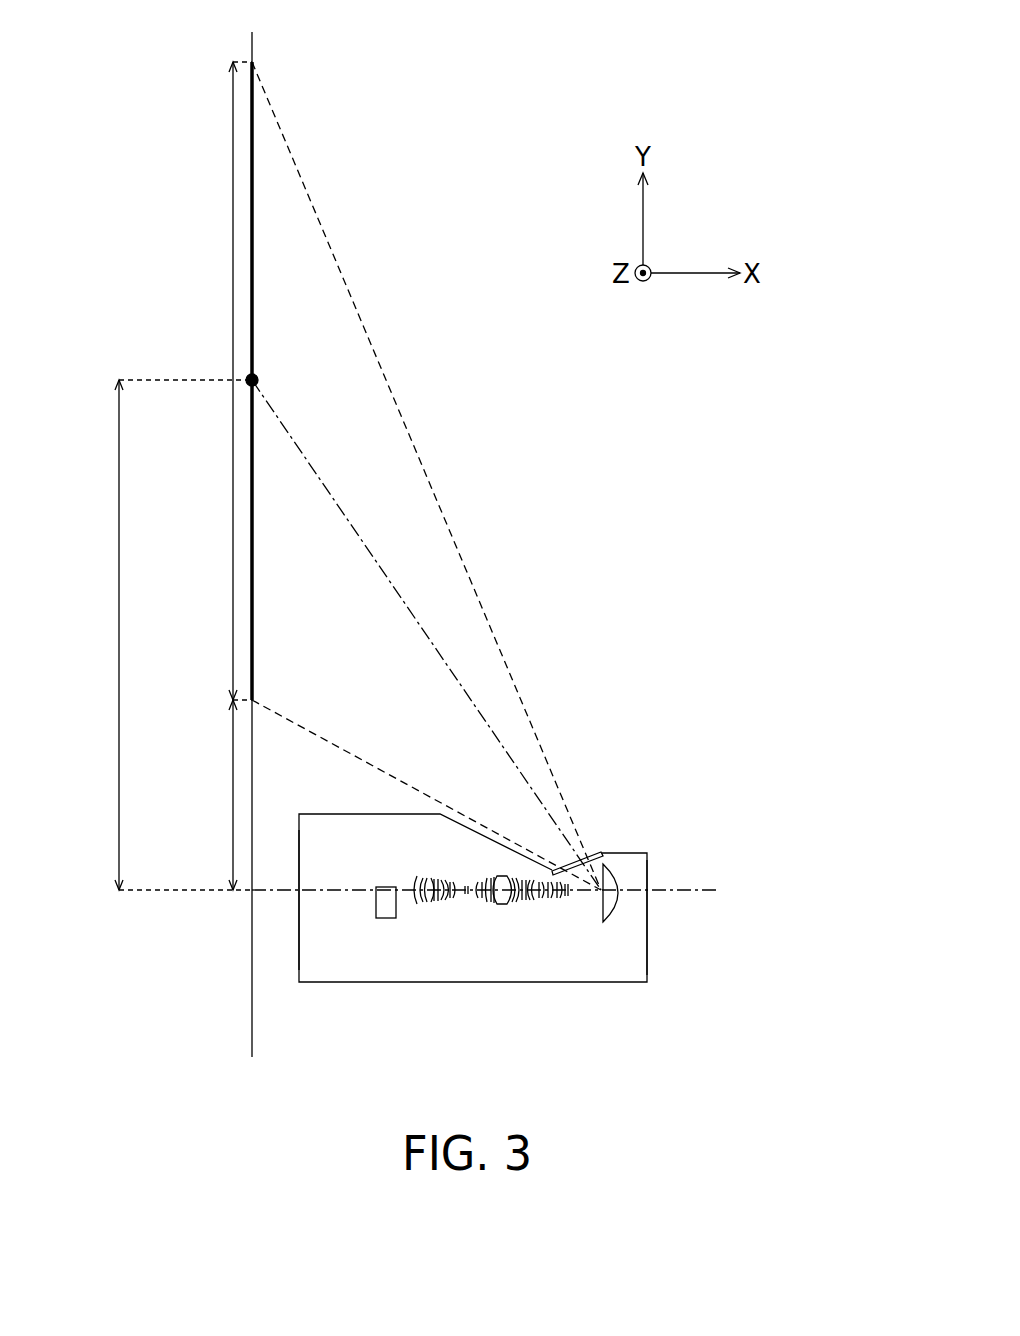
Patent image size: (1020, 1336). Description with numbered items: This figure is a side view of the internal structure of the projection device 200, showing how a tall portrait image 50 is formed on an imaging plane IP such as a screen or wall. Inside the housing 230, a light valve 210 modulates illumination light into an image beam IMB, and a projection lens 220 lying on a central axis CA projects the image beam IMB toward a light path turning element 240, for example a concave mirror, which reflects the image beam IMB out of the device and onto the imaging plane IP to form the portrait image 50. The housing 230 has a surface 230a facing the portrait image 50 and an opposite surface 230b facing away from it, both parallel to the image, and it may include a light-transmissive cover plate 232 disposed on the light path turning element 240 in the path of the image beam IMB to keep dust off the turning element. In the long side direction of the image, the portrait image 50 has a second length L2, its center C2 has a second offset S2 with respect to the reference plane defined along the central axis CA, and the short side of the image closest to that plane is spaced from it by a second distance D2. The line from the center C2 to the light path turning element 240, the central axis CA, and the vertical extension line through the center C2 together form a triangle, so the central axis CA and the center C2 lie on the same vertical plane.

The portrait image 50 is at (252, 527).
The projection device 200 is at (467, 922).
The light valve 210 is at (386, 918).
The projection lens 220 is at (417, 915).
The housing 230 is at (424, 982).
The surface of housing 230a is at (286, 941).
The surface of housing 230b is at (661, 931).
The light-transmissive cover plate 232 is at (602, 851).
The light path turning element 240 is at (622, 912).
The center of portrait image C2 is at (258, 380).
The imaging plane IP is at (252, 1017).
The image beam IMB is at (505, 650).
The central axis of projection lens CA is at (668, 888).
The second length L2 is at (225, 381).
The second offset S2 is at (167, 635).
The second distance D2 is at (225, 795).